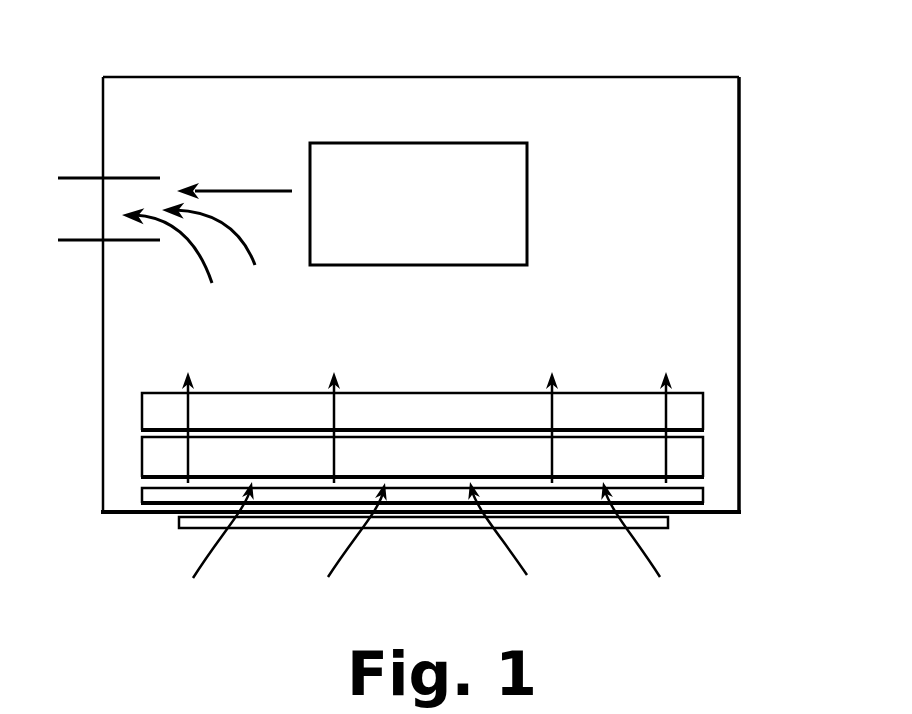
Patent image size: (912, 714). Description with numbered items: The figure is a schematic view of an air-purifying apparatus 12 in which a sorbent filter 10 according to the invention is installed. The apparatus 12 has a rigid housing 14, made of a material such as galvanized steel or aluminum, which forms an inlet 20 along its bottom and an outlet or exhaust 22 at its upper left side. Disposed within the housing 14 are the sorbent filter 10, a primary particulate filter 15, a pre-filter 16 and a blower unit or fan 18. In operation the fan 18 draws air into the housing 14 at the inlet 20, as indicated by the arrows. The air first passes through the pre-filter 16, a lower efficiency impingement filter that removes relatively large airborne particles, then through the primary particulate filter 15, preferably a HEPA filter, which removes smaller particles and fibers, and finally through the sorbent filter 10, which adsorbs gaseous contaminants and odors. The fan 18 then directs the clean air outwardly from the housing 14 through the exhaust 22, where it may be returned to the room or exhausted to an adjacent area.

The air-purifying apparatus 12 is at (775, 158).
The housing 14 is at (740, 277).
The blower unit or fan 18 is at (540, 163).
The outlet or exhaust 22 is at (85, 176).
The sorbent filter 10 is at (715, 410).
The primary particulate filter 15 is at (715, 455).
The pre-filter 16 is at (690, 492).
The inlet 20 is at (265, 530).